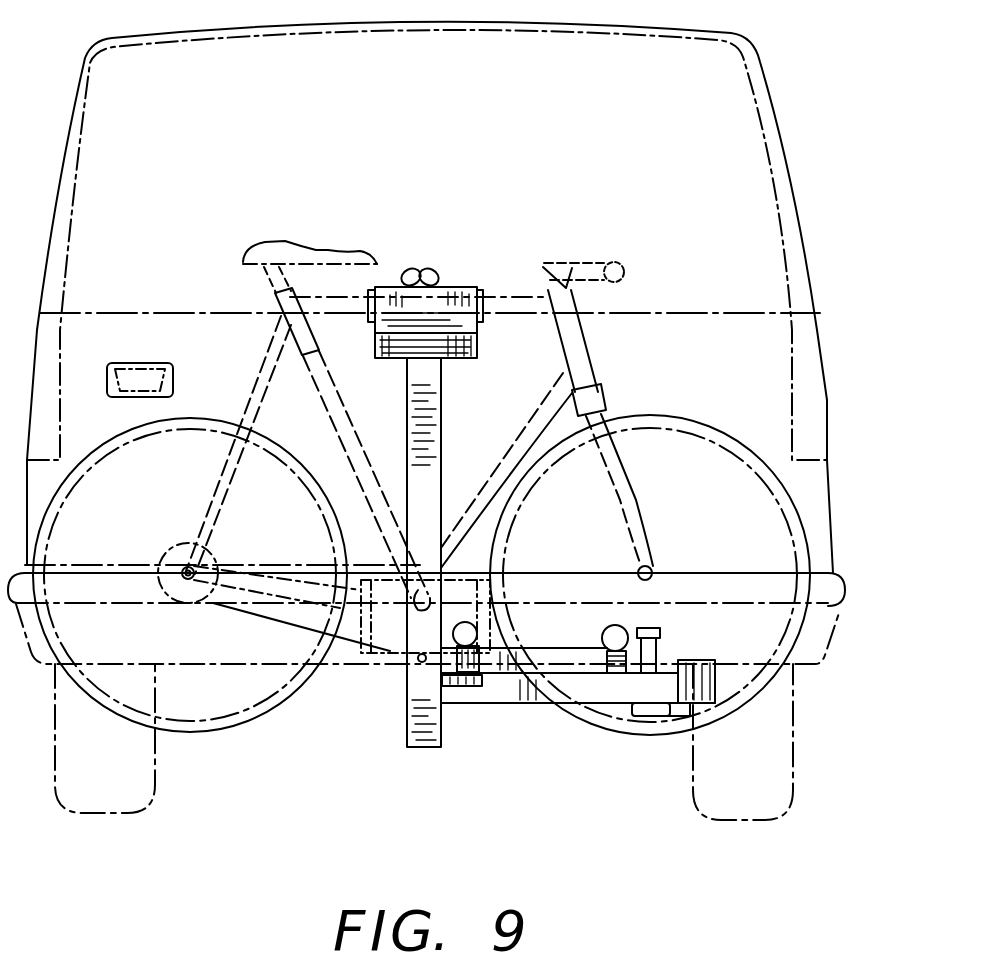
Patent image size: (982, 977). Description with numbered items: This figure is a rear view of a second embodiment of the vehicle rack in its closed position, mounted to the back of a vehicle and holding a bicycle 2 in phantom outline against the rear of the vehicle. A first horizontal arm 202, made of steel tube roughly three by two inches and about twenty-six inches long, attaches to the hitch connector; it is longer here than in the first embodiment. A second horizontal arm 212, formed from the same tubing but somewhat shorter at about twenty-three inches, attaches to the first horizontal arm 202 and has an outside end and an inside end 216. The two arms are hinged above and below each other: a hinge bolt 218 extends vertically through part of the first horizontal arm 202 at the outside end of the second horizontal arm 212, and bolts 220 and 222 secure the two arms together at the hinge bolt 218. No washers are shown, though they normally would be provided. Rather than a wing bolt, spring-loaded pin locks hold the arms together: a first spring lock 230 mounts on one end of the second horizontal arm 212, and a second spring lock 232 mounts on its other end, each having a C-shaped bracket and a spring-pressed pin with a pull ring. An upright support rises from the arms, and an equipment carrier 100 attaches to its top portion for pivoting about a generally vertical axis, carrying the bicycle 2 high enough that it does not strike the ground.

The bicycle 2 is at (594, 374).
The equipment carrier 100 is at (480, 349).
The first horizontal arm 202 is at (505, 687).
The second horizontal arm 212 is at (545, 663).
The inside end 216 is at (457, 657).
The hinge bolt 218 is at (650, 628).
The bolt 220 is at (668, 648).
The bolt 222 is at (700, 716).
The first spring lock 230 is at (467, 683).
The second spring lock 232 is at (634, 623).